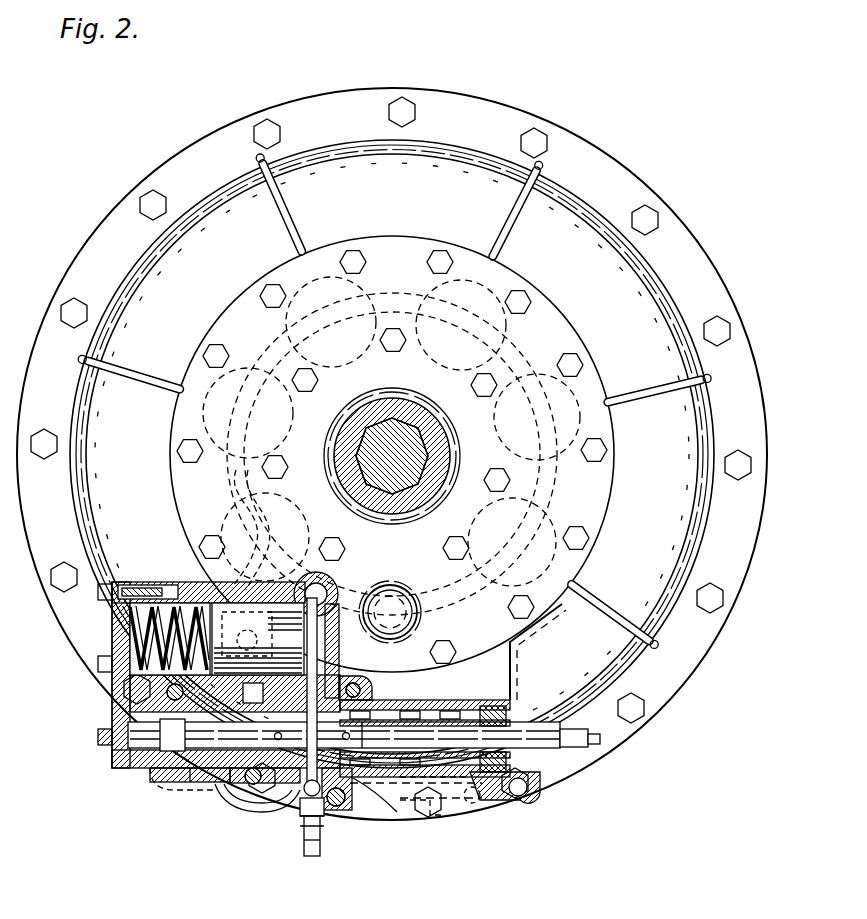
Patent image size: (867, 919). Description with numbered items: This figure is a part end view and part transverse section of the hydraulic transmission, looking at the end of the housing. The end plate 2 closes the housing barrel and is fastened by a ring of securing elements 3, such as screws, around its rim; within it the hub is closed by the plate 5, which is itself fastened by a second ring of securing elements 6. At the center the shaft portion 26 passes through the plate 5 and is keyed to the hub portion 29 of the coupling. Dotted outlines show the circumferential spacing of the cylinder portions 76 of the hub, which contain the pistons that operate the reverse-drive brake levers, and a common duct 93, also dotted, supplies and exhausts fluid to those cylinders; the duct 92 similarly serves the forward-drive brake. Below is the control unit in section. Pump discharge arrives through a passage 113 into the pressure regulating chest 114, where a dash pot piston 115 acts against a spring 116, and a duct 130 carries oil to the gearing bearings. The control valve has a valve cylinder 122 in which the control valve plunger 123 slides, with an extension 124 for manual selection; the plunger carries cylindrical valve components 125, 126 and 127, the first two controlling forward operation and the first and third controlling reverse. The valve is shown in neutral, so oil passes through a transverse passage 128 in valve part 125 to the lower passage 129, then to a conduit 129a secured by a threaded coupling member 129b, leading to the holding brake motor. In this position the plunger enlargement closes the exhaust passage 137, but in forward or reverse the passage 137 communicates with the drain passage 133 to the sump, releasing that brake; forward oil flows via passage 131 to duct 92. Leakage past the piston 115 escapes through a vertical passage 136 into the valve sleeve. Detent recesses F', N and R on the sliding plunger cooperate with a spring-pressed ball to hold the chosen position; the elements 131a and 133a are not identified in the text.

The end plate 2 is at (612, 182).
The securing elements 3 is at (405, 98).
The plate 5 is at (552, 328).
The securing elements 6 is at (508, 292).
The shaft portion 26 is at (432, 455).
The hub portion 29 is at (430, 490).
The cylinder portions 76 is at (300, 290).
The duct 92 is at (488, 800).
The duct 93 is at (224, 488).
The passage 113 is at (324, 593).
The pressure regulating chest 114 is at (196, 586).
The dash pot piston 115 is at (340, 642).
The spring 116 is at (130, 646).
The valve cylinder 122 is at (512, 704).
The control valve plunger 123 is at (574, 747).
The extension 124 is at (540, 750).
The valve component 125 is at (375, 790).
The valve component 126 is at (455, 722).
The valve component 127 is at (160, 770).
The transverse passage 128 is at (240, 790).
The lower passage 129 is at (322, 792).
The conduit 129a is at (324, 848).
The coupling member 129b is at (306, 850).
The duct 130 is at (258, 642).
The passage 131 is at (470, 782).
The link arm 131a is at (432, 806).
The drain passage 133 is at (180, 772).
The arm end 133a is at (318, 832).
The vertical passage 136 is at (112, 706).
The exhaust passage 137 is at (282, 826).
The rivets F' is at (340, 711).
The detent recess N is at (262, 810).
The detent recess R is at (215, 770).